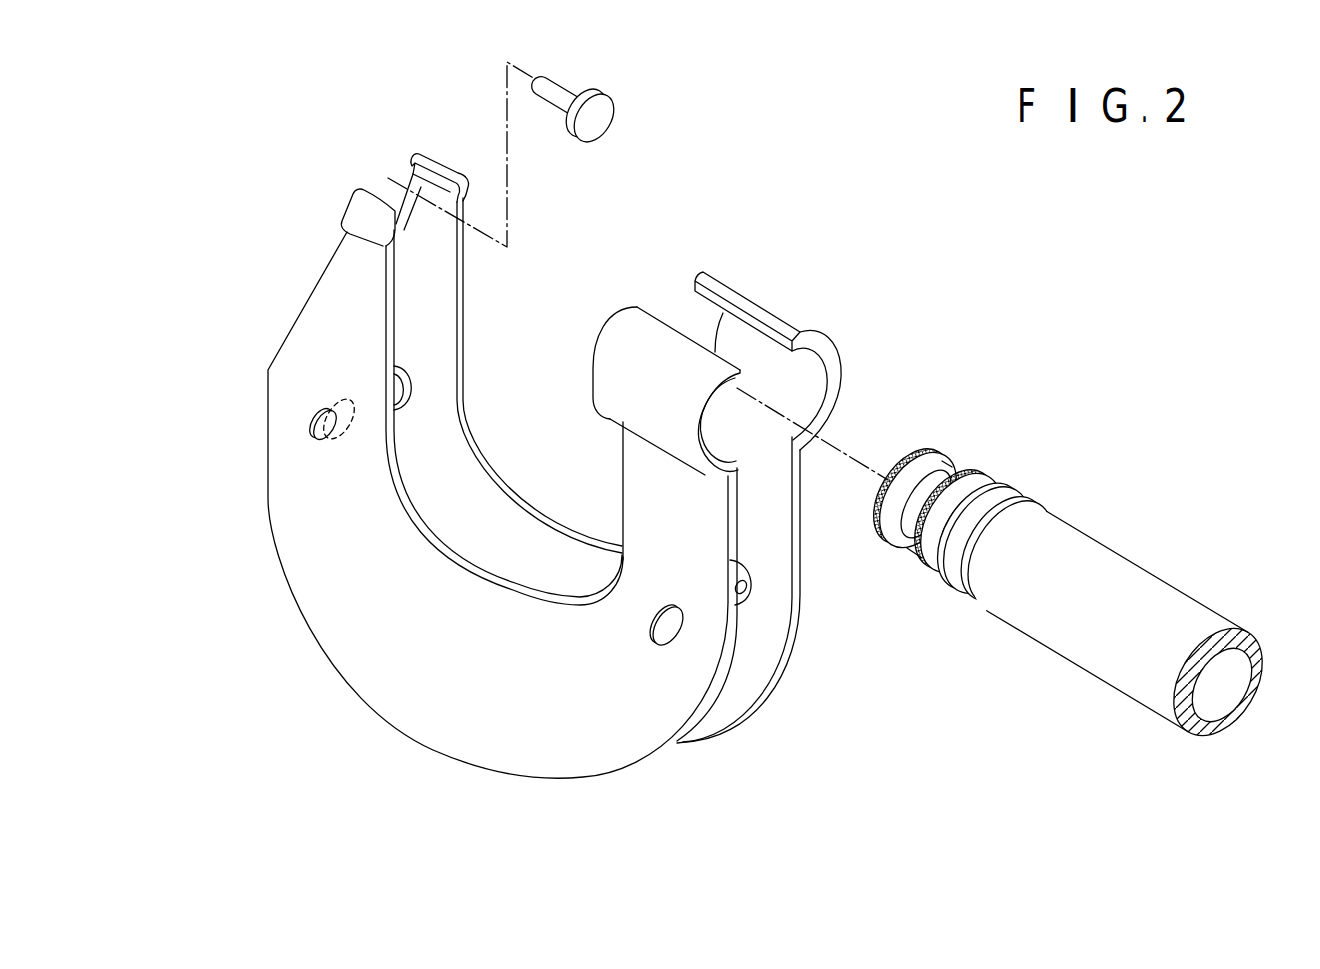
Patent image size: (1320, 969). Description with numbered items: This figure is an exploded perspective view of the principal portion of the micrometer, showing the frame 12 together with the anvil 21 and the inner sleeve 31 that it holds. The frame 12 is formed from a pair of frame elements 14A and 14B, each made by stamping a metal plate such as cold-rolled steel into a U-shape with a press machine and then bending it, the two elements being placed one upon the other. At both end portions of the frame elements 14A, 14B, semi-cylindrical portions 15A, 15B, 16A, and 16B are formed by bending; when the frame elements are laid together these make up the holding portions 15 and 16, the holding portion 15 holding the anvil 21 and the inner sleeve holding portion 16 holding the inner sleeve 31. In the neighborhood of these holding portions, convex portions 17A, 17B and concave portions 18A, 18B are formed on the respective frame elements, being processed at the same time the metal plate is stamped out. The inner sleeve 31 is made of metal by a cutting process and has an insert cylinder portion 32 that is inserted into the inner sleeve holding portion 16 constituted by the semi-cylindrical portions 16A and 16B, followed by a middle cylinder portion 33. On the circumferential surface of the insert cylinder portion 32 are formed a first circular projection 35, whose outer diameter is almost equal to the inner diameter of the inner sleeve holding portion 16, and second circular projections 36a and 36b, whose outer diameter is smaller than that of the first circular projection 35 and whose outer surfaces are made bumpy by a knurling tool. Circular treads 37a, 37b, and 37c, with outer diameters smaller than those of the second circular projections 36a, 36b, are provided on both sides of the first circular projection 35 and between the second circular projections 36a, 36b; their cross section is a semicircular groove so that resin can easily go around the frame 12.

The frame 12 is at (724, 794).
The frame element 14A is at (425, 745).
The frame element 14B is at (765, 695).
The holding portion 15 is at (359, 106).
The semi-cylindrical portion 15A is at (343, 211).
The semi-cylindrical portion 15B is at (433, 158).
The inner sleeve holding portion 16 is at (766, 250).
The semi-cylindrical portion 16A is at (607, 356).
The semi-cylindrical portion 16B is at (786, 326).
The convex portion 17A is at (316, 427).
The convex portion 17B is at (757, 596).
The concave portion 18A is at (662, 646).
The concave portion 18B is at (415, 399).
The anvil 21 is at (608, 115).
The inner sleeve 31 is at (1210, 615).
The insert cylinder portion 32 is at (962, 594).
The middle cylinder portion 33 is at (1130, 705).
The first circular projection 35 is at (1025, 502).
The second circular projection 36a is at (933, 452).
The second circular projection 36b is at (976, 476).
The circular tread 37a is at (944, 477).
The circular tread 37b is at (999, 490).
The circular tread 37c is at (1032, 500).